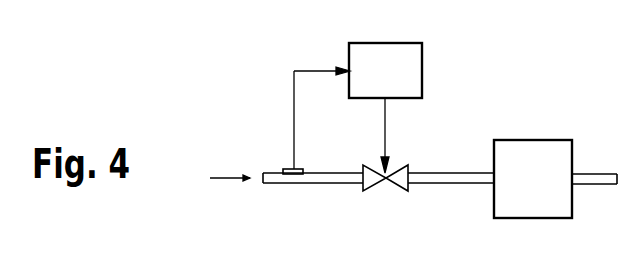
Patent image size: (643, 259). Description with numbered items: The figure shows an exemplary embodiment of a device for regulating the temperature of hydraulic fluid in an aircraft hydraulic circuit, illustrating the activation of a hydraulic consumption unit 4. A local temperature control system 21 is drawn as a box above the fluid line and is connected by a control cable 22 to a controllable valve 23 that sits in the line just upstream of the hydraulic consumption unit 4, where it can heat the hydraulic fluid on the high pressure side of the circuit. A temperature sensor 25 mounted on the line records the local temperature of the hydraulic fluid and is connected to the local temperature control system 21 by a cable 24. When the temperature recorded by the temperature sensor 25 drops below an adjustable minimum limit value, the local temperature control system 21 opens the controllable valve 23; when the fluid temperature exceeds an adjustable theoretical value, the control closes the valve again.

The hydraulic consumption unit 4 is at (539, 188).
The local temperature control system 21 is at (401, 84).
The control cable 22 is at (385, 136).
The controllable valve 23 is at (398, 180).
The cable 24 is at (294, 106).
The temperature sensor 25 is at (283, 168).